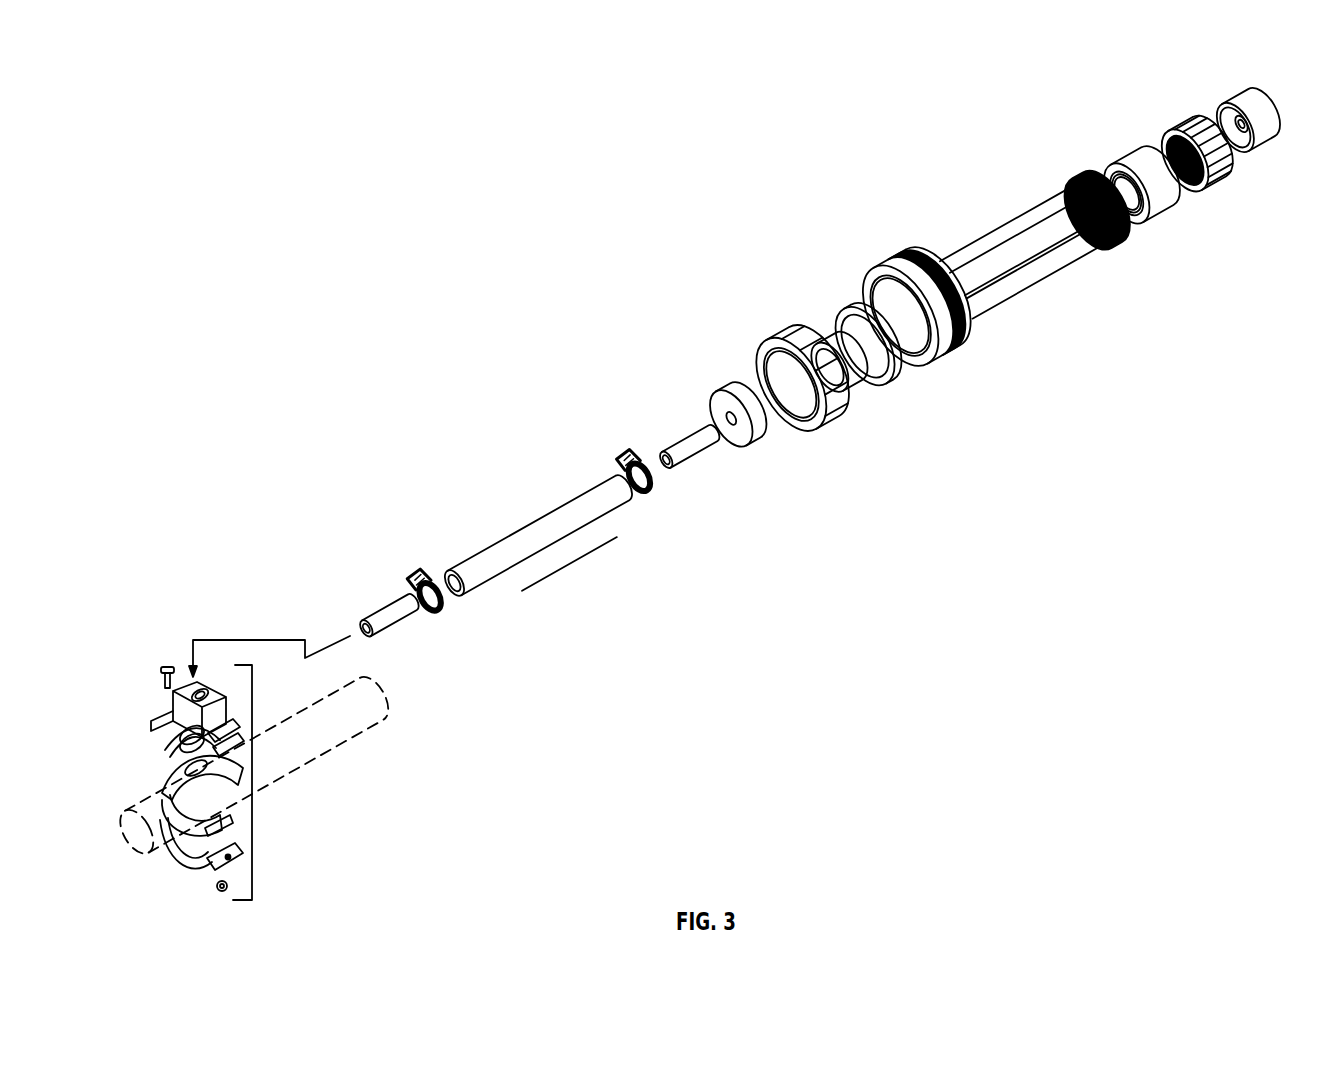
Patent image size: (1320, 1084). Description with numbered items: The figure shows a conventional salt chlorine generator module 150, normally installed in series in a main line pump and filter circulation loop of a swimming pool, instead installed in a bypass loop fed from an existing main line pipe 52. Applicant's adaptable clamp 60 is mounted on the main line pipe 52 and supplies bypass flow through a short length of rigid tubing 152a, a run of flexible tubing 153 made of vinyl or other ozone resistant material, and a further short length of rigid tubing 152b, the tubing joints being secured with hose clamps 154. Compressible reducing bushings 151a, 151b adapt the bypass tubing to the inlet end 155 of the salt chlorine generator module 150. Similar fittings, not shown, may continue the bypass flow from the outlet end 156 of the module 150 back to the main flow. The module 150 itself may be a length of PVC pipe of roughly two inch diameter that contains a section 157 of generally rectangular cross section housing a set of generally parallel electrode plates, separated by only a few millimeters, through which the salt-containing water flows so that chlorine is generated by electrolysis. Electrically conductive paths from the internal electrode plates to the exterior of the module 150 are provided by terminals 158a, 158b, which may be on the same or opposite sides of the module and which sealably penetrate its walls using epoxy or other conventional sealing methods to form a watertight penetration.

The salt chlorine generator module 150 is at (886, 186).
The compressible reducing bushing 151a is at (764, 442).
The compressible reducing bushing 151b is at (860, 390).
The rigid tubing 152a is at (393, 635).
The rigid tubing 152b is at (693, 460).
The flexible tubing 153 is at (545, 517).
The hose clamp 154 is at (425, 573).
The inlet end 155 is at (913, 268).
The outlet end 156 is at (1060, 194).
The section having a generally rectangular cross section 157 is at (988, 277).
The terminal 158a is at (945, 248).
The terminal 158b is at (974, 350).
The adaptable clamp 60 is at (252, 693).
The main line pipe 52 is at (307, 762).